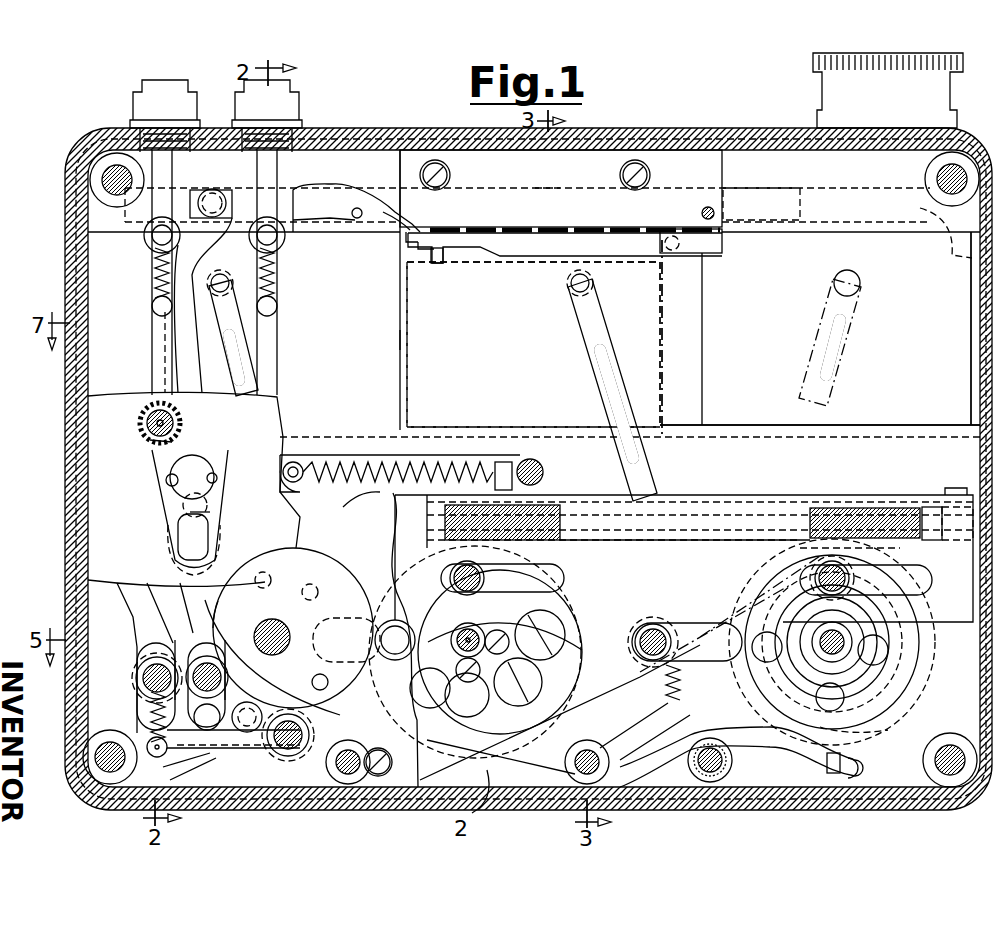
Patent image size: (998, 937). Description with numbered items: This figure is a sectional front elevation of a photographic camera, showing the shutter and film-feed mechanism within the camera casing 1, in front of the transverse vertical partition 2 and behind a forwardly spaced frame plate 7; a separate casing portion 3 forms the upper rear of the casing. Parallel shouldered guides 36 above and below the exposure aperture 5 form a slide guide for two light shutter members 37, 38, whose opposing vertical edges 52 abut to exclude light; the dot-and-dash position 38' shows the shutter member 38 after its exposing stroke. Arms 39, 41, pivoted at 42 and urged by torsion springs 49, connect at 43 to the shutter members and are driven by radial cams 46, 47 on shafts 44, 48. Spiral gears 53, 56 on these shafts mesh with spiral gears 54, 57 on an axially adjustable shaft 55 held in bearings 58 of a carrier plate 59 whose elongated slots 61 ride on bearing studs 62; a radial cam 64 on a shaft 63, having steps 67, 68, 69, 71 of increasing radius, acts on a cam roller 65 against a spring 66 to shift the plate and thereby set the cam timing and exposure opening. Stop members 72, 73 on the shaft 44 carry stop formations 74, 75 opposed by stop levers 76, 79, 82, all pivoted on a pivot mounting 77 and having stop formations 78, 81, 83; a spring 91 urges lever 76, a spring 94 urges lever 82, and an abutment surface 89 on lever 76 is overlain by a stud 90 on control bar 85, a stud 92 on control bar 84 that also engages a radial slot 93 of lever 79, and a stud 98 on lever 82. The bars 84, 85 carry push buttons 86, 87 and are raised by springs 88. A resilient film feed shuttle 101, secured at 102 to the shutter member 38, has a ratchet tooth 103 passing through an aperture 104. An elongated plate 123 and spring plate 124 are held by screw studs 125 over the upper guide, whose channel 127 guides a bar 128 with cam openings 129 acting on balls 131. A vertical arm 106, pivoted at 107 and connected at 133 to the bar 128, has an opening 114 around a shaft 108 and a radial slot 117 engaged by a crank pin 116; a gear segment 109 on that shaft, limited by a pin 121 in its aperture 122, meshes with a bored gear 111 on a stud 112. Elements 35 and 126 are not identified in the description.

The camera casing 1 is at (70, 188).
The finger push button 87 is at (138, 83).
The finger push button 86 is at (300, 90).
The knob 35 is at (822, 96).
The spring plate 124 is at (666, 168).
The screw studs 125 is at (451, 178).
The channel 127 is at (548, 190).
The shuttle securement 102 is at (652, 228).
The film feed shuttle 101 is at (478, 247).
The ratchet tooth 103 is at (402, 238).
The aperture 104 is at (412, 251).
The tab 126 is at (433, 266).
The elongated plate 123 is at (712, 252).
The balls 131 is at (355, 219).
The cam openings 129 is at (352, 205).
The bar 128 is at (318, 190).
The shouldered guides 36 is at (882, 218).
The shutter member position 38' is at (933, 226).
The light shutter member 38 is at (773, 338).
The exposure aperture 5 is at (660, 340).
The light shutter member 37 is at (385, 387).
The opposing vertical edges 52 is at (398, 334).
The vertical arm 41 is at (588, 376).
The operable connection 43 is at (224, 272).
The vertical arm 39 is at (250, 346).
The vertical control bar 85 is at (160, 351).
The vertical control bar 84 is at (272, 332).
The springs 88 is at (150, 272).
The operative connection 133 is at (218, 190).
The vertical arm 106 is at (180, 340).
The frame plate 7 is at (97, 540).
The stud 112 is at (140, 422).
The bored gear 111 is at (150, 441).
The gear segment 109 is at (217, 447).
The aperture 122 is at (218, 478).
The pin 121 is at (166, 480).
The crank pin 116 is at (183, 505).
The radial slot 117 is at (215, 505).
The intermediate opening 114 is at (170, 522).
The shaft 108 is at (180, 541).
The spring 66 is at (410, 460).
The bearings 58 is at (443, 500).
The spiral gear 57 is at (548, 502).
The axially adjustable transverse shaft 55 is at (763, 508).
The carrier plate 59 is at (805, 502).
The spiral gear 54 is at (855, 503).
The spiral gear 53 is at (905, 550).
The elongated slots 61 is at (552, 567).
The bearing studs 62 is at (465, 569).
The abutment stop formation 74 is at (777, 563).
The abutment stop formation 78 is at (760, 568).
The stop lever 76 is at (622, 698).
The spring 94 is at (668, 683).
The third stop lever 82 is at (645, 745).
The pivot mounting 77 is at (587, 744).
The step 71 is at (380, 628).
The cam roller 65 is at (414, 628).
The spiral gear 56 is at (393, 551).
The radial cam 64 is at (316, 560).
The step 69 is at (263, 553).
The step 68 is at (226, 584).
The shaft 63 is at (279, 631).
The second stop lever 79 is at (217, 618).
The step 67 is at (318, 675).
The second radial cam 47 is at (530, 655).
The rotatable shaft 48 is at (478, 627).
The shaft 44 is at (835, 628).
The stop member 72 is at (893, 667).
The stop member 73 is at (903, 651).
The abutment stop formation 75 is at (888, 731).
The abutment stop formation 81 is at (862, 746).
The radial cam 46 is at (812, 763).
The abutment formation 83 is at (856, 761).
The pivot 42 is at (347, 783).
The torsion springs 49 is at (705, 781).
The laterally extending stud 90 is at (147, 717).
The spring 91 is at (147, 697).
The abutment surface 89 is at (157, 758).
The radial slot 93 is at (246, 732).
The laterally extending stud 98 is at (288, 758).
The laterally extending stud 92 is at (222, 772).
The pivotal mounting 107 is at (150, 806).
The partition 2 is at (211, 443).
The casing portion 3 is at (567, 469).